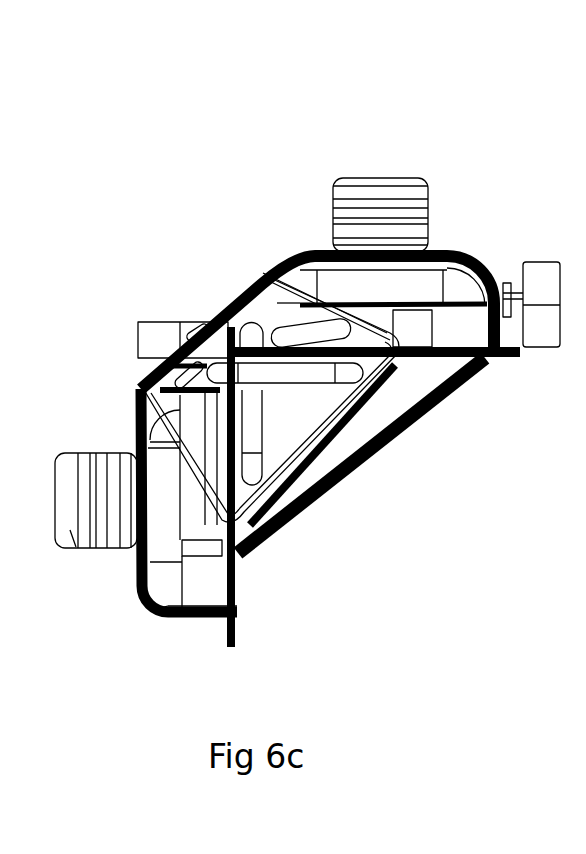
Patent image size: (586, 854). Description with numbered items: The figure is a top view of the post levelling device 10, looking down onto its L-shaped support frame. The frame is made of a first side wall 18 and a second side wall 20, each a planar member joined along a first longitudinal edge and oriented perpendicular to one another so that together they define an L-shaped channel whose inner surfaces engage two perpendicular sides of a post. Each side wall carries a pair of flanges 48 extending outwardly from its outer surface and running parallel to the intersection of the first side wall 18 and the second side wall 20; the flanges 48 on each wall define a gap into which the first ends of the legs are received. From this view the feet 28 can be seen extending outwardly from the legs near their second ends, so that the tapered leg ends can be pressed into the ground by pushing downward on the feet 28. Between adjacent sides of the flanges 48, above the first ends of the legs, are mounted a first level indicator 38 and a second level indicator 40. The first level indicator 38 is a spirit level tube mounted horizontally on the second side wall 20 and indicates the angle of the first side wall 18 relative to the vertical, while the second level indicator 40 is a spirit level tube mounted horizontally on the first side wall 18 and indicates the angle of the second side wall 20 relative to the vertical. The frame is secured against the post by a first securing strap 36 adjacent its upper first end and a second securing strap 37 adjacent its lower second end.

The post levelling device 10 is at (118, 142).
The first side wall 18 is at (483, 362).
The second side wall 20 is at (236, 618).
The foot 28 is at (346, 190).
The first securing strap 36 is at (260, 510).
The second securing strap 37 is at (357, 467).
The first level indicator 38 is at (155, 608).
The second level indicator 40 is at (395, 315).
The flanges 48 is at (256, 290).